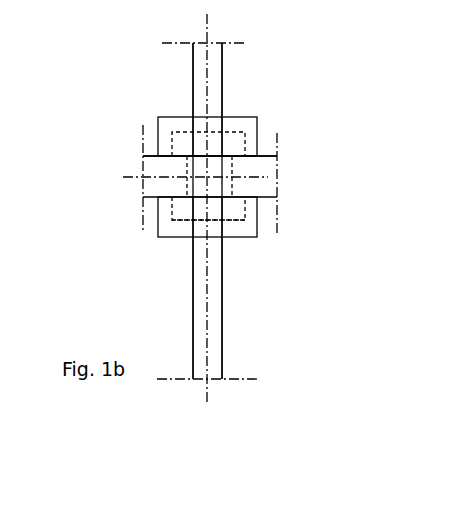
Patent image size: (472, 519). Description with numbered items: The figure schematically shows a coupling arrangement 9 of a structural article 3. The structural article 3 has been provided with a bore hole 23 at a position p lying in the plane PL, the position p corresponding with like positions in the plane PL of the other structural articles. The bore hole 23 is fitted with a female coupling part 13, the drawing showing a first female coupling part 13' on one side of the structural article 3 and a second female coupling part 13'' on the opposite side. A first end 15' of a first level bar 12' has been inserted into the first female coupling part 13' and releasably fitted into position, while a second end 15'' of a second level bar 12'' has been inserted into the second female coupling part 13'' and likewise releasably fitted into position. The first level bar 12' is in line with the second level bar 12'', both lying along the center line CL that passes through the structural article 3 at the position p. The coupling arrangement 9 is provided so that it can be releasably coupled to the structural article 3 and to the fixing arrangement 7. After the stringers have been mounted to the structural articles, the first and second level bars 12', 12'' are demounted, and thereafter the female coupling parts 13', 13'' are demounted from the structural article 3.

The center line CL is at (208, 24).
The plane PL is at (124, 177).
The first level bar 12' is at (241, 80).
The second level bar 12'' is at (241, 308).
The first female coupling part 13' is at (242, 137).
The second female coupling part 13'' is at (240, 232).
The first end 15' is at (165, 115).
The second end 15'' is at (162, 234).
The position p is at (183, 140).
The structural article 3 is at (270, 178).
The female coupling part 13 is at (164, 125).
The bore hole 23 is at (183, 208).
The coupling arrangement 9 is at (60, 215).
The fixing arrangement 7 is at (130, 319).